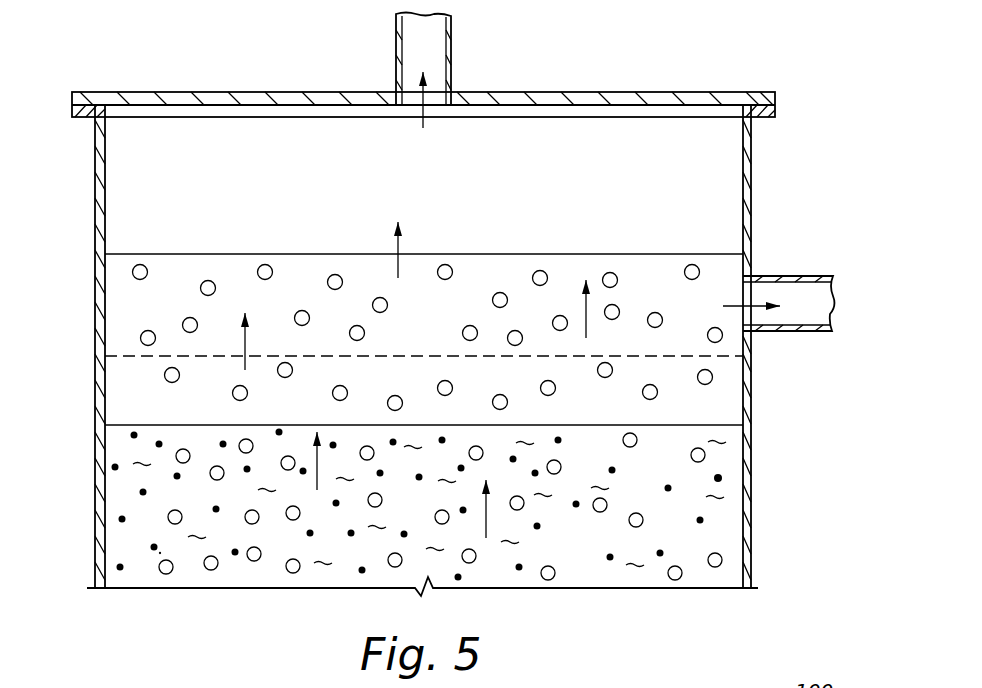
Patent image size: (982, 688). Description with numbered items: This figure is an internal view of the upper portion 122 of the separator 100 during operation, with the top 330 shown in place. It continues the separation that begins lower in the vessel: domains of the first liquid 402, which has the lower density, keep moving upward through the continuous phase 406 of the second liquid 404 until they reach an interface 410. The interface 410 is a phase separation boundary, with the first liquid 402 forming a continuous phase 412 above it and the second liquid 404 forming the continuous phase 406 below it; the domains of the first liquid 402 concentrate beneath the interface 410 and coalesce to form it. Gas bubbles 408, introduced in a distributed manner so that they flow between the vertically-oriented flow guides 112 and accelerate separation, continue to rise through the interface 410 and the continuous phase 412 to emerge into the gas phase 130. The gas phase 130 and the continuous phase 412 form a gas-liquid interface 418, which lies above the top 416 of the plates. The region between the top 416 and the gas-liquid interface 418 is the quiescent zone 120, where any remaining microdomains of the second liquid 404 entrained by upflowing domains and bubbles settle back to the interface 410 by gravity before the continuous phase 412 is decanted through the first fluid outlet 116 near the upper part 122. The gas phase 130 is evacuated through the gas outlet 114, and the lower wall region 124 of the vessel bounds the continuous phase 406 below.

The separator 100 is at (735, 35).
The gas outlet 114 is at (452, 28).
The top 330 is at (196, 92).
The upper part 122 is at (95, 166).
The gas phase 130 is at (447, 197).
The continuous phase of the first liquid 412 is at (213, 268).
The gas-liquid interface 418 is at (566, 254).
The first fluid outlet 116 is at (811, 273).
The top of the plates 416 is at (140, 354).
The quiescent zone 120 is at (447, 320).
The gas bubbles 408 is at (727, 370).
The interface 410 is at (700, 422).
The vessel bottom 124 is at (95, 426).
The flow guides 112 is at (127, 490).
The first liquid 402 is at (718, 478).
The second liquid 404 is at (731, 530).
The continuous phase of the second liquid 406 is at (137, 553).